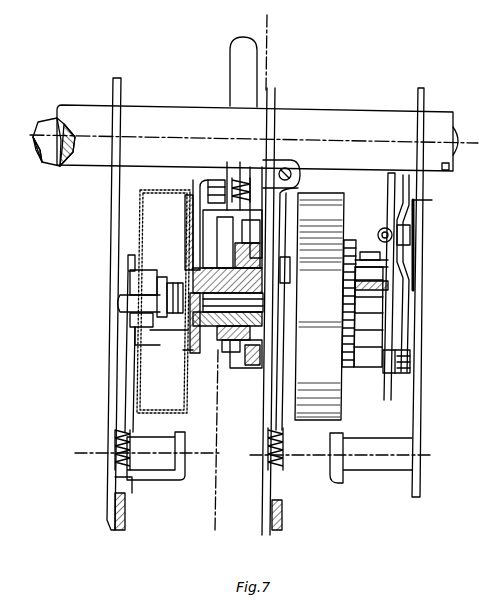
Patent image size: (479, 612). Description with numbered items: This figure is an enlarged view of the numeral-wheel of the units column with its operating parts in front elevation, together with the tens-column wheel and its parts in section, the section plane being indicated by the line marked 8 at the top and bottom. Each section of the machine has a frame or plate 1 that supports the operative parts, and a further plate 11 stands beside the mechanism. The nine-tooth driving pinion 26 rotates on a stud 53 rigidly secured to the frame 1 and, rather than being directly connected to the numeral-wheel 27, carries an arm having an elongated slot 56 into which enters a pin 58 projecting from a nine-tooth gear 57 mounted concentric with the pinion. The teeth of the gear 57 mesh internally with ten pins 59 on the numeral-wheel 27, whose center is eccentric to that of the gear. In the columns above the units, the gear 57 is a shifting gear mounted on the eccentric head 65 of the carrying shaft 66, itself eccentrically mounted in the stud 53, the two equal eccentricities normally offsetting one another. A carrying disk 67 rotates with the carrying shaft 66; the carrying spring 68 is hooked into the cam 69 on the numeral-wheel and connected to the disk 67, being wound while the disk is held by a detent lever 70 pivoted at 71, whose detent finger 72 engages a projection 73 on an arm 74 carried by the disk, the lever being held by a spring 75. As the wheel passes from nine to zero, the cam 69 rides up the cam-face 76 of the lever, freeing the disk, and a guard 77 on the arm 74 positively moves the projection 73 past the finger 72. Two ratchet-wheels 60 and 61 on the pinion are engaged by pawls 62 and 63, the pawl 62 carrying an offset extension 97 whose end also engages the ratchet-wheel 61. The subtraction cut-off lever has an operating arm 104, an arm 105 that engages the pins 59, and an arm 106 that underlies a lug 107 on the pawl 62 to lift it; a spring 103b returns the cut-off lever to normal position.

The frame or plate 1 is at (118, 89).
The section line 8- 8 is at (258, 15).
The plate 11 is at (276, 324).
The driving pinion 26 is at (233, 342).
The numeral-wheel 27 is at (147, 390).
The stud 53 is at (222, 342).
The elongated slot 56 is at (178, 193).
The gear 57 is at (182, 352).
The pin 58 is at (203, 262).
The pins 59 is at (182, 378).
The ratchet-wheel 60 is at (392, 365).
The ratchet-wheel 61 is at (410, 364).
The pawl 62 is at (403, 260).
The pawl 63 is at (410, 233).
The eccentric head 65 is at (200, 262).
The carrying shaft 66 is at (264, 300).
The carrying disk 67 is at (128, 257).
The carrying spring 68 is at (175, 285).
The cam 69 is at (168, 341).
The detent lever 70 is at (124, 354).
The pivot 71 is at (146, 450).
The detent finger 72 is at (130, 322).
The projection 73 is at (140, 312).
The arm 74 is at (157, 291).
The spring 75 is at (126, 437).
The cam-face 76 is at (143, 303).
The guard 77 is at (112, 375).
The offset extension 97 is at (403, 297).
The spring 103b is at (245, 176).
The arm 104 is at (243, 68).
The arm 105 is at (205, 185).
The arm 106 is at (196, 198).
The lug 107 is at (221, 176).